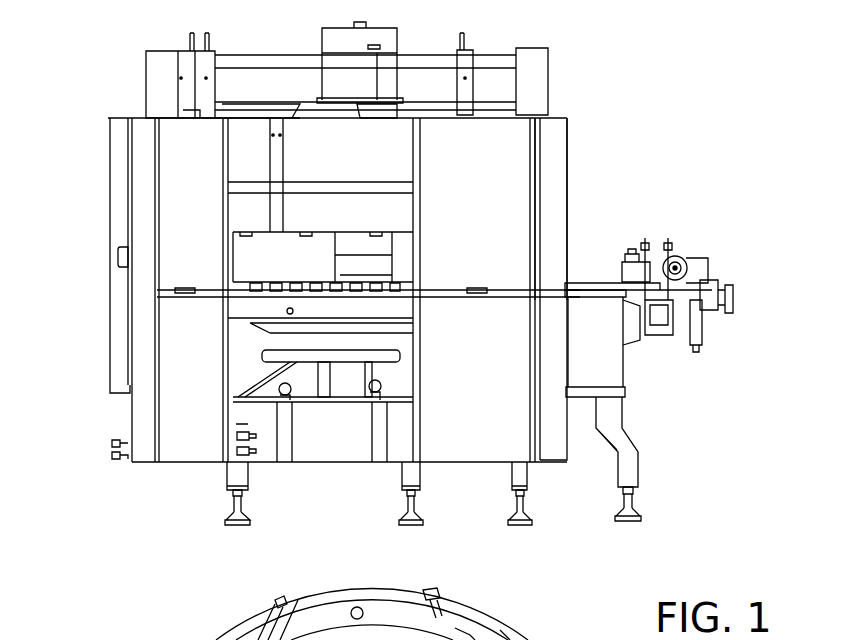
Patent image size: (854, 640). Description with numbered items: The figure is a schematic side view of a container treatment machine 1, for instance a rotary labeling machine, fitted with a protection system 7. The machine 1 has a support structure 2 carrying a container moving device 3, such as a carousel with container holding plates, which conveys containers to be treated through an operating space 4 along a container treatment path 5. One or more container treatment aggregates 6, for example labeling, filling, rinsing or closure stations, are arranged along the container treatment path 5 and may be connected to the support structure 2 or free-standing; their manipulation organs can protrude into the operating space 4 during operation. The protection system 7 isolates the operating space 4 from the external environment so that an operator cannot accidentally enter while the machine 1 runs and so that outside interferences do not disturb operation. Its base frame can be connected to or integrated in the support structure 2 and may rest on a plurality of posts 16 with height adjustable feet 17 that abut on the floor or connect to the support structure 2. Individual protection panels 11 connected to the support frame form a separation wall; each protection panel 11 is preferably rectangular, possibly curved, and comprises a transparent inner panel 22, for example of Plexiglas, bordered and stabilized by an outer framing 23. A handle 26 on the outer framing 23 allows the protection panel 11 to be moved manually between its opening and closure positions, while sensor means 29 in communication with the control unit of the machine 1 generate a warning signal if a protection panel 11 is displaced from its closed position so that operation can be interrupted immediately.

The container treatment machine 1 is at (610, 161).
The support structure 2 is at (425, 475).
The container moving device 3 is at (258, 302).
The operating space 4 is at (273, 270).
The container treatment path 5 is at (473, 639).
The container treatment aggregate 6 is at (111, 633).
The protection system 7 is at (182, 226).
The protection panel 11 is at (562, 198).
The post 16 is at (237, 477).
The height adjustable foot 17 is at (243, 508).
The transparent inner panel 22 is at (562, 173).
The outer framing 23 is at (567, 138).
The handle 26 is at (480, 290).
The sensor means 29 is at (558, 639).